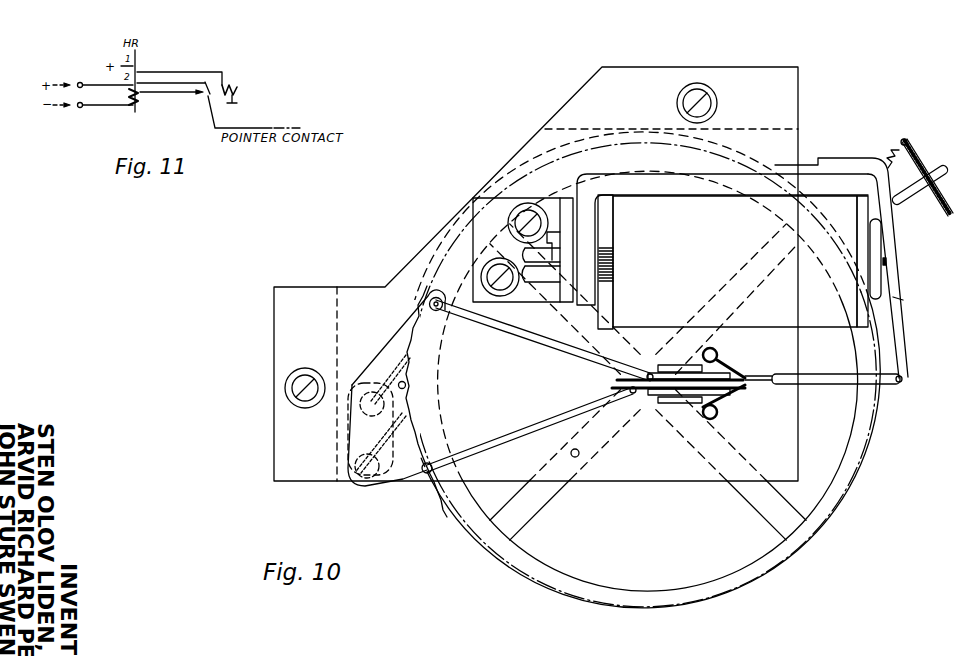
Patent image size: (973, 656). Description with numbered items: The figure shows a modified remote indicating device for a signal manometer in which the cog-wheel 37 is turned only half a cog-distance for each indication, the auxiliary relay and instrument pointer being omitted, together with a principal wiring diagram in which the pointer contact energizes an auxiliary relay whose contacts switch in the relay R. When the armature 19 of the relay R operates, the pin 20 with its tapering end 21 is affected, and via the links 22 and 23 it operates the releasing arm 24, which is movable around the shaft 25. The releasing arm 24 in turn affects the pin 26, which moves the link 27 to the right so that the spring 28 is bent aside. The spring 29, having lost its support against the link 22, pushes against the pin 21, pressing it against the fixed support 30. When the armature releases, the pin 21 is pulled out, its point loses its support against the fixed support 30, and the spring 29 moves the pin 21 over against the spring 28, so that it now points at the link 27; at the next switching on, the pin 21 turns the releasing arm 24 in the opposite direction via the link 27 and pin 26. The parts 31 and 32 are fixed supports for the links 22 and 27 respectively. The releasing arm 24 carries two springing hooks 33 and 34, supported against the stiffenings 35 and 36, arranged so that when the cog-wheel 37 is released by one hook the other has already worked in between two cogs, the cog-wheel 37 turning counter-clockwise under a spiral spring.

In FIG. 10, the armature 19 is at (896, 272).
In FIG. 10, the pin 20 is at (903, 384).
In FIG. 10, the tapering end 21 is at (768, 377).
In FIG. 10, the link 22 is at (657, 363).
In FIG. 10, the link 23 is at (540, 340).
In FIG. 10, the releasing arm 24 is at (407, 337).
In FIG. 10, the shaft 25 is at (406, 385).
In FIG. 10, the pin 26 is at (533, 423).
In FIG. 10, the link 27 is at (648, 393).
In FIG. 10, the spring 28 is at (733, 396).
In FIG. 10, the spring 29 is at (732, 370).
In FIG. 10, the fixed support 30 is at (615, 385).
In FIG. 10, the fixed support 31 is at (675, 372).
In FIG. 10, the fixed support 32 is at (665, 404).
In FIG. 10, the springing hook 33 is at (397, 366).
In FIG. 10, the springing hook 34 is at (388, 433).
In FIG. 10, the stiffening 35 is at (385, 380).
In FIG. 10, the stiffening 36 is at (378, 449).
In FIG. 10, the cog-wheel 37 is at (868, 471).
In FIG. 11, the relay R is at (237, 90).
In FIG. 10, the relay R is at (827, 207).